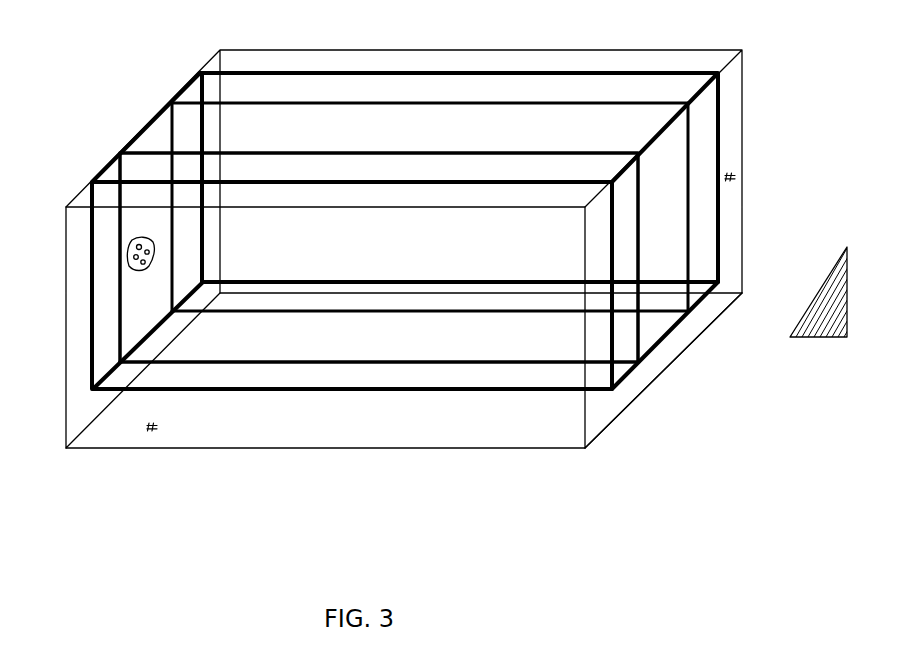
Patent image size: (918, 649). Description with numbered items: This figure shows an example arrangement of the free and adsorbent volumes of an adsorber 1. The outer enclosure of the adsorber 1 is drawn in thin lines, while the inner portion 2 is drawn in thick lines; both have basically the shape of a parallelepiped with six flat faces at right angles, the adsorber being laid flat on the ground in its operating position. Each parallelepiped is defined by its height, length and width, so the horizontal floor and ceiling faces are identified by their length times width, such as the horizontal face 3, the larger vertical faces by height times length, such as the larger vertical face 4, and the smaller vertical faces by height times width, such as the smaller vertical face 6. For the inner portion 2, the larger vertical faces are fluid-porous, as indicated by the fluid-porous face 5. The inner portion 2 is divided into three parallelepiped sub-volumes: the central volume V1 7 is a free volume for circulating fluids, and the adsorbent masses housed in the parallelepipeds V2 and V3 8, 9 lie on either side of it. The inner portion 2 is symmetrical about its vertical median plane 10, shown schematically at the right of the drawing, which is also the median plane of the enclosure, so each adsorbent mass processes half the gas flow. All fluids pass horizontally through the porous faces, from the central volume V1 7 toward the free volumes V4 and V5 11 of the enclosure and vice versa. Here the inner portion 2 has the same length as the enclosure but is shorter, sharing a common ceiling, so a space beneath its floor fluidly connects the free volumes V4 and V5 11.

The adsorber 1 is at (64, 296).
The inner portion 2 is at (151, 145).
The horizontal face 3 is at (617, 413).
The larger vertical face 4 is at (147, 431).
The fluid-porous face 5 is at (128, 253).
The smaller vertical face 6 is at (736, 177).
The central volume V1 7 is at (302, 141).
The parallelepiped V2 8 is at (181, 376).
The parallelepiped V3 9 is at (703, 112).
The median plane 10 is at (821, 317).
The free volumes V4 and V5 11 is at (330, 419).